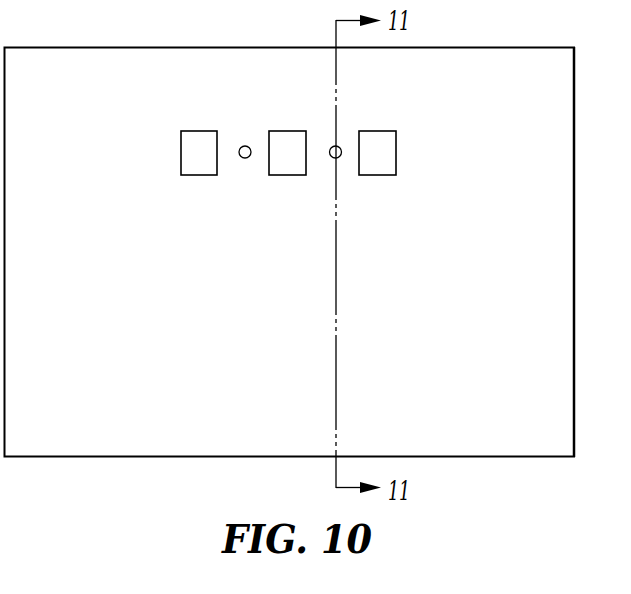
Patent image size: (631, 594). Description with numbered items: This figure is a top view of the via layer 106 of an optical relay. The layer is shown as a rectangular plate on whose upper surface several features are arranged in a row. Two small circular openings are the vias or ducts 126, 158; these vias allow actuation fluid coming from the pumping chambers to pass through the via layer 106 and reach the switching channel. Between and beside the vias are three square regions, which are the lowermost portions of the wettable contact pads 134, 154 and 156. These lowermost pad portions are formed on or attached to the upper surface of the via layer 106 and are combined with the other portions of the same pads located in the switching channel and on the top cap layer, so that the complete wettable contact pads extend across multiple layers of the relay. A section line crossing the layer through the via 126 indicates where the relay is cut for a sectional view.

The via layer 106 is at (106, 47).
The wettable contact pad 156 is at (201, 137).
The wettable contact pad 154 is at (287, 137).
The wettable contact pad 134 is at (375, 136).
The via 158 is at (240, 158).
The via 126 is at (340, 158).